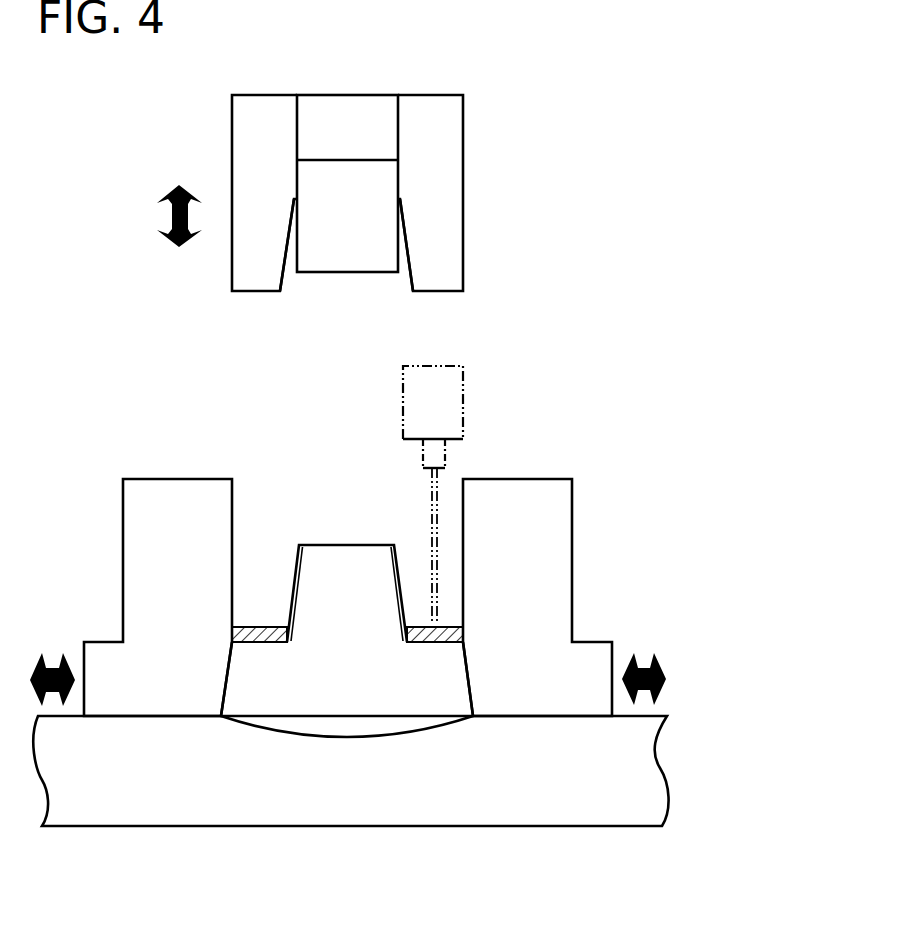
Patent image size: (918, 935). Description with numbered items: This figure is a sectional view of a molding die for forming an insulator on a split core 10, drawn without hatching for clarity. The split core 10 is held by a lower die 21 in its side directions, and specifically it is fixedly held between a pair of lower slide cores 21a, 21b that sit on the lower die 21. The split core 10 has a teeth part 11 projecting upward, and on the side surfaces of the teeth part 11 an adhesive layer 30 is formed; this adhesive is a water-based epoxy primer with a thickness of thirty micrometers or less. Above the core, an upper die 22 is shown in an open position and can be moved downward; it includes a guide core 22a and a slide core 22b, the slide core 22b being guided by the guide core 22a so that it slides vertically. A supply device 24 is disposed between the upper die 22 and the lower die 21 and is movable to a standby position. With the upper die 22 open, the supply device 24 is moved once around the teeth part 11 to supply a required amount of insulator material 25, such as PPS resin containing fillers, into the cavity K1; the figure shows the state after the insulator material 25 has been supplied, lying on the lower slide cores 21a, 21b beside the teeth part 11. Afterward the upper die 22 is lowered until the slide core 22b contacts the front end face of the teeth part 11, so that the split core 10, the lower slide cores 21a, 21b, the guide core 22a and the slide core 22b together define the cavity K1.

The upper die 22 is at (420, 193).
The guide core 22a is at (452, 132).
The slide core 22b is at (378, 187).
The cavity K1 is at (410, 277).
The supply device 24 is at (448, 415).
The adhesive layer 30 is at (296, 556).
The teeth part 11 is at (345, 560).
The split core 10 is at (365, 677).
The insulator material 25 is at (457, 627).
The lower slide core 21a is at (202, 558).
The lower slide core 21b is at (543, 558).
The lower die 21 is at (148, 790).